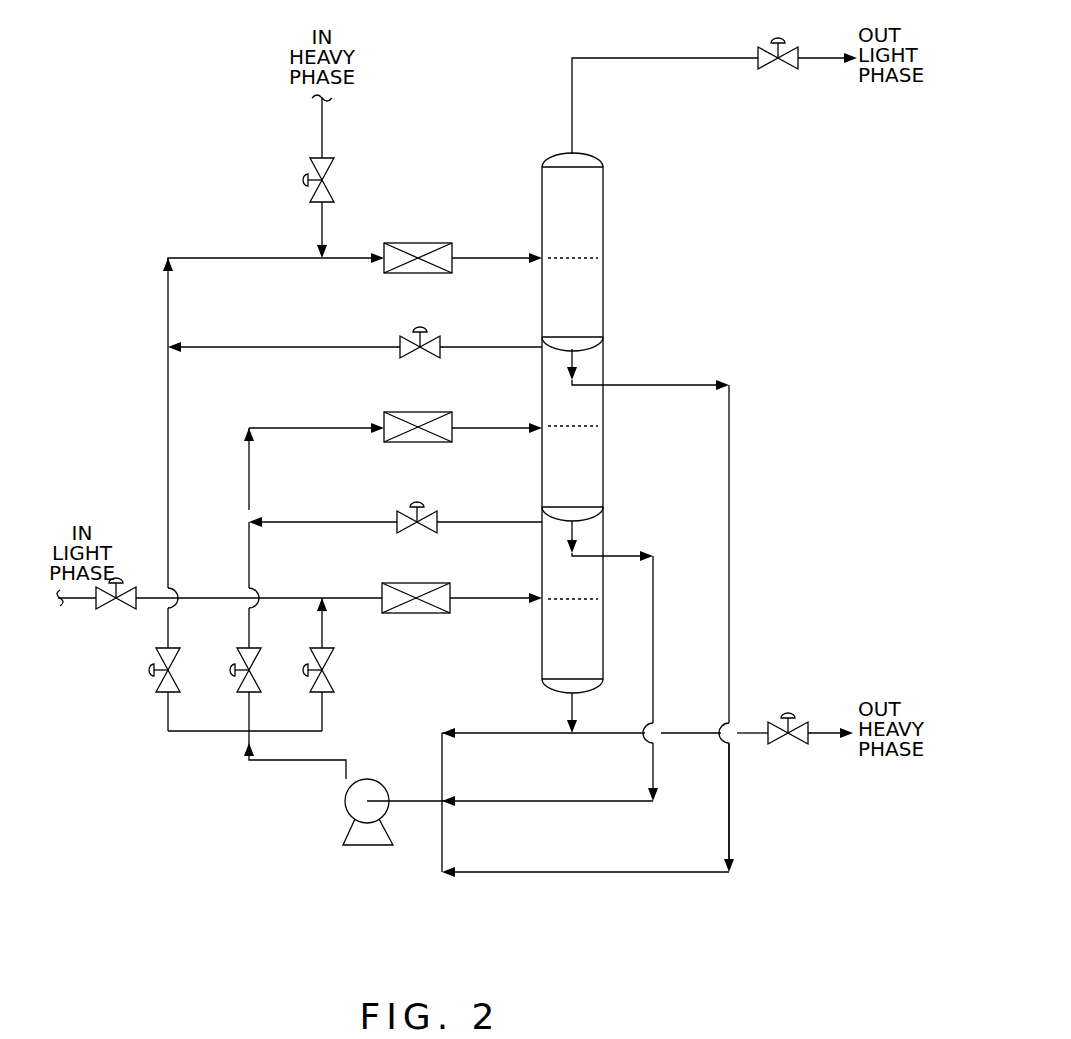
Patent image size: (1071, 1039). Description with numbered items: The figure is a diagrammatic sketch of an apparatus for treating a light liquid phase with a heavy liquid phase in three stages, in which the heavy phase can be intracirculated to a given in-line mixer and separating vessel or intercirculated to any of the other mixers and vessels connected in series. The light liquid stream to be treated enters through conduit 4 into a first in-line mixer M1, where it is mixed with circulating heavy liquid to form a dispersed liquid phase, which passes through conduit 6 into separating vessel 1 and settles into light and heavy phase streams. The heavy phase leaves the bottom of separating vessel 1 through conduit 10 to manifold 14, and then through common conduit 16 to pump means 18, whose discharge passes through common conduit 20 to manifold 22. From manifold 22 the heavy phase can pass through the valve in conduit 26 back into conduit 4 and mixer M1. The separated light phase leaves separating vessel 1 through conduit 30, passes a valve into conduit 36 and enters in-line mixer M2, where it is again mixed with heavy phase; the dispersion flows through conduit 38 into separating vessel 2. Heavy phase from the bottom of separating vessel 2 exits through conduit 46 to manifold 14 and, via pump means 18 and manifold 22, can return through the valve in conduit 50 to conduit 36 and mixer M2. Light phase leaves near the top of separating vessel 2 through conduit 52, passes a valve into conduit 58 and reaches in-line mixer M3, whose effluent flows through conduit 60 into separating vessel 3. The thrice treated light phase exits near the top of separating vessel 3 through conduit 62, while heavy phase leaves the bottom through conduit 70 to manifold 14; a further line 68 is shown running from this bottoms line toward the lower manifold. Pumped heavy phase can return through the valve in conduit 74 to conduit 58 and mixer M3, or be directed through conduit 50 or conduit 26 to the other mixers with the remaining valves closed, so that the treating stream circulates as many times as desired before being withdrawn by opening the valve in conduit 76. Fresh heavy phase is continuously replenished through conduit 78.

The separating vessel 1 is at (564, 672).
The separating vessel 2 is at (564, 497).
The separating vessel 3 is at (564, 325).
The conduit 4 is at (158, 603).
The conduit 6 is at (505, 600).
The conduit 10 is at (572, 736).
The manifold 14 is at (442, 768).
The common conduit 16 is at (435, 806).
The pump means 18 is at (345, 814).
The common conduit 20 is at (312, 760).
The manifold 22 is at (262, 731).
The conduit 26 is at (328, 664).
The conduit 30 is at (437, 512).
The conduit 36 is at (288, 428).
The conduit 38 is at (470, 428).
The conduit 46 is at (677, 580).
The conduit 50 is at (249, 535).
The conduit 52 is at (480, 331).
The conduit 58 is at (196, 258).
The conduit 60 is at (480, 258).
The conduit 62 is at (572, 100).
The heavy phase recycle line 68 is at (729, 826).
The conduit 70 is at (754, 428).
The conduit 74 is at (158, 421).
The conduit 76 is at (784, 740).
The conduit 78 is at (322, 210).
The in-line mixer M1 is at (424, 583).
The in-line mixer M2 is at (418, 412).
The in-line mixer M3 is at (420, 243).